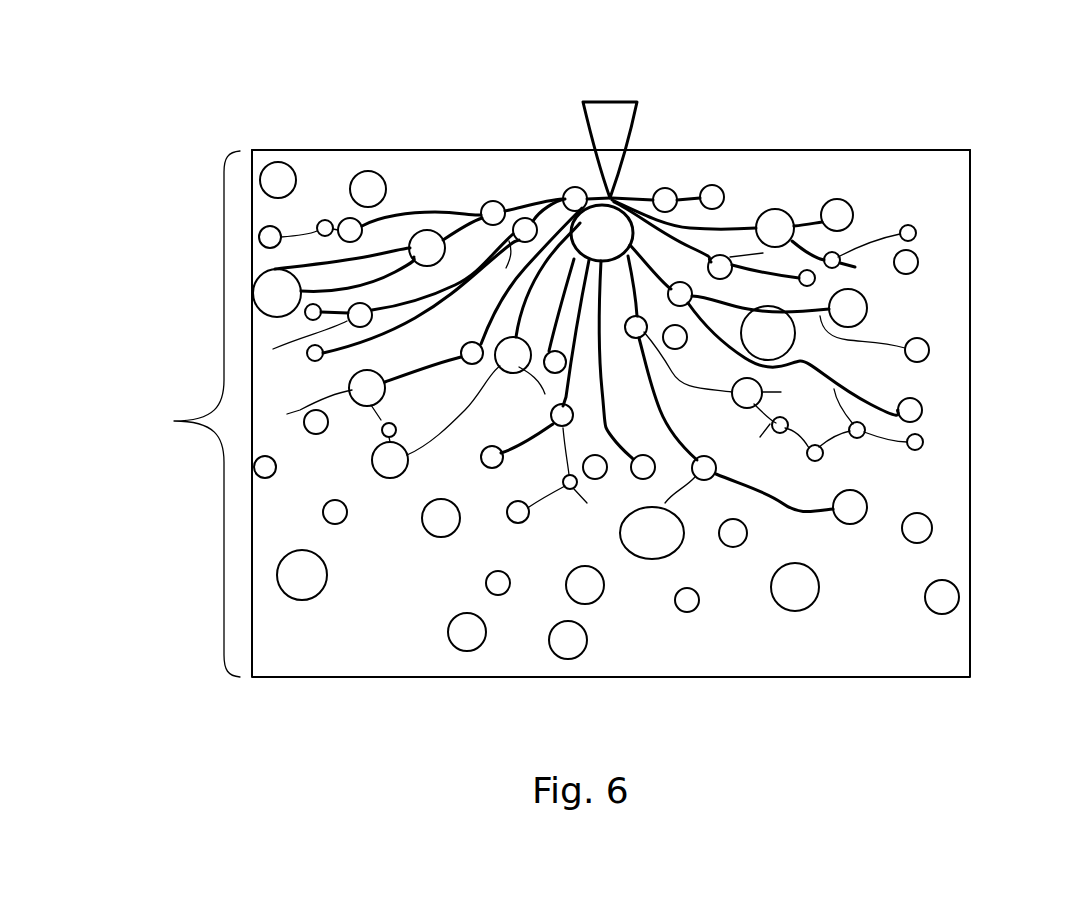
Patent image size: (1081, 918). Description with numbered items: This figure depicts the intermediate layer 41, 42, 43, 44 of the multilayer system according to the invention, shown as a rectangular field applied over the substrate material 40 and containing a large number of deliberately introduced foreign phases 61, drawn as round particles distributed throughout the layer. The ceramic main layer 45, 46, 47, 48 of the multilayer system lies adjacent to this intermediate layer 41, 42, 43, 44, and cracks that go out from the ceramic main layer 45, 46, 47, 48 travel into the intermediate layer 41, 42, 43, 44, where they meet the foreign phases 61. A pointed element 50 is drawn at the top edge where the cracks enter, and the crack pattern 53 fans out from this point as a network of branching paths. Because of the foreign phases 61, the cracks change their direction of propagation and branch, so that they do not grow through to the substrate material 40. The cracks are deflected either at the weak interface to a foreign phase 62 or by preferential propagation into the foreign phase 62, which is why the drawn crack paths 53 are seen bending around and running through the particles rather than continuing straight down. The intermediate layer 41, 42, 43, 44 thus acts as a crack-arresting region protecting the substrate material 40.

The substrate material 40 is at (611, 435).
The intermediate layer 41 is at (190, 414).
The intermediate layer 42 is at (196, 284).
The intermediate layer 43 is at (196, 376).
The intermediate layer 44 is at (196, 485).
The ceramic main layer 45 is at (366, 416).
The ceramic main layer 46 is at (505, 416).
The ceramic main layer 47 is at (620, 416).
The ceramic main layer 48 is at (736, 416).
The electrode tip 50 is at (619, 112).
The conductive filaments 53 is at (729, 214).
The foreign phases 61 is at (917, 232).
The foreign phase 62 is at (817, 625).